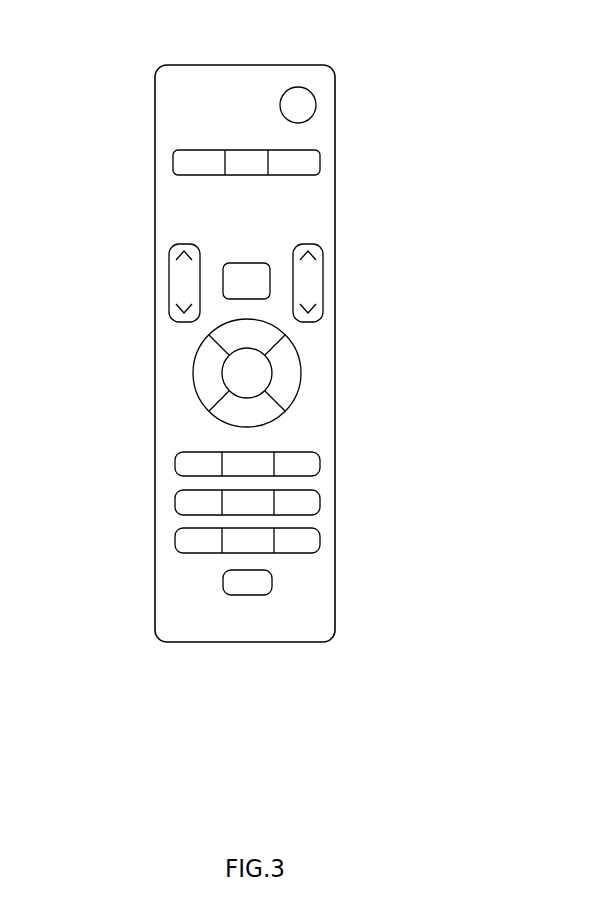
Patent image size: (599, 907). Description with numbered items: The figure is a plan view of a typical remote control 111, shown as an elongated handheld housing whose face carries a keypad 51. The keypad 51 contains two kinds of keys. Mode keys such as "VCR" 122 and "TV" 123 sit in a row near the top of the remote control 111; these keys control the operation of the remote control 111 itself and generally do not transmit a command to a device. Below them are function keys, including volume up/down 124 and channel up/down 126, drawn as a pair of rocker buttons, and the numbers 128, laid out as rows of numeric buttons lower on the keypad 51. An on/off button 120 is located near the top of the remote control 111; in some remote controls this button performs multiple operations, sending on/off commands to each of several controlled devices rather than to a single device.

The keypad 51 is at (494, 214).
The remote control 111 is at (155, 95).
The on/off button 120 is at (317, 100).
The "VCR" mode key 122 is at (318, 155).
The "TV" mode key 123 is at (240, 153).
The volume up/down function key 124 is at (172, 281).
The channel up/down function key 126 is at (324, 268).
The number function keys 128 is at (184, 462).